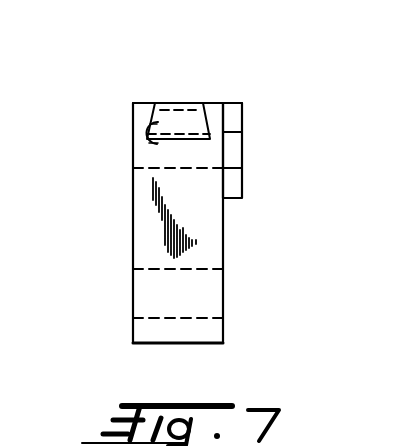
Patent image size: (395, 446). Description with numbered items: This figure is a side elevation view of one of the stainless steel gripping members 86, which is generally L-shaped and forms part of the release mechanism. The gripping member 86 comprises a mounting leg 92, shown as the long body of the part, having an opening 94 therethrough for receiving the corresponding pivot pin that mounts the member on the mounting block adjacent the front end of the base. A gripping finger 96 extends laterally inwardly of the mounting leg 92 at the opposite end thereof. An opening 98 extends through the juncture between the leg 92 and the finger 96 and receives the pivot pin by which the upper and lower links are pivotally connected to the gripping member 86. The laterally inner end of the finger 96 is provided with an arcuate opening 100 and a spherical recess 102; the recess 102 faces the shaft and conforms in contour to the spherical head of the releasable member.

The gripping member 86 is at (108, 128).
The mounting leg 92 is at (207, 250).
The opening 94 is at (172, 318).
The gripping finger 96 is at (145, 110).
The opening 98 is at (208, 168).
The arcuate opening 100 is at (199, 107).
The spherical recess 102 is at (157, 144).